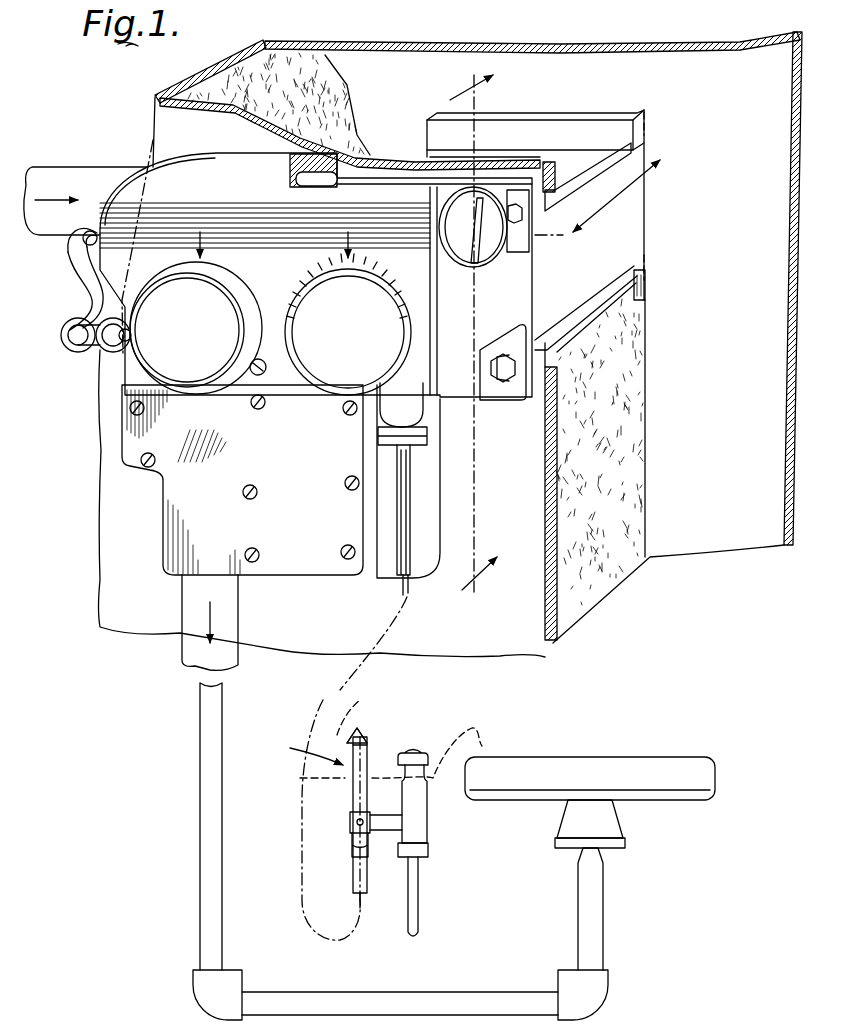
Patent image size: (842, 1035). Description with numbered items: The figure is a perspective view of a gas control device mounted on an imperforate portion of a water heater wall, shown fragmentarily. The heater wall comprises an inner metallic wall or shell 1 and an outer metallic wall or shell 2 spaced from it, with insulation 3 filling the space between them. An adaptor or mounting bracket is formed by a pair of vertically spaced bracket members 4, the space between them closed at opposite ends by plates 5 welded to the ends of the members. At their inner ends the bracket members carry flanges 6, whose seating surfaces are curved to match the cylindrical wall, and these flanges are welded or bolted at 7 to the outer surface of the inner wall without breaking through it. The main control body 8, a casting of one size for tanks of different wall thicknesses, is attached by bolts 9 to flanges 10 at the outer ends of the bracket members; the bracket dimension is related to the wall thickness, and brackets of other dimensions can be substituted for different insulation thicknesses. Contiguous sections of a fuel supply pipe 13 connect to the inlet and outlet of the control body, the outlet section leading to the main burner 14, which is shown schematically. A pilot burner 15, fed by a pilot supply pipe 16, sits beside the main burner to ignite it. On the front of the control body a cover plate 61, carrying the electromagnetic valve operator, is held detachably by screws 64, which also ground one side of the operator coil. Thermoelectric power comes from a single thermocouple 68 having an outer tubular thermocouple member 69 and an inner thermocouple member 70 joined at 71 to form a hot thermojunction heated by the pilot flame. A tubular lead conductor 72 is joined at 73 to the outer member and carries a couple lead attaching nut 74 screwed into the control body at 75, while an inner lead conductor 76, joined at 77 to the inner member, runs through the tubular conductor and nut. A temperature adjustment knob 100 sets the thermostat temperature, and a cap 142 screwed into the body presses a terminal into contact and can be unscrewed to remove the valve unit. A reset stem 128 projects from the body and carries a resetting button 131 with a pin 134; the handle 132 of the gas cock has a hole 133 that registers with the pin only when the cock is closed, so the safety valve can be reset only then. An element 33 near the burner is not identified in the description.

The inner metallic wall or shell 1 is at (565, 42).
The outer metallic wall or shell 2 is at (165, 127).
The insulation 3 is at (205, 84).
The bracket members 4 is at (612, 160).
The plates 5 is at (648, 226).
The flanges 6 is at (520, 128).
The attachment location 7 is at (648, 125).
The main control body 8 is at (279, 273).
The bolts 9 is at (500, 375).
The flanges 10 is at (553, 198).
The fuel supply pipe 13 is at (48, 177).
The main burner 14 is at (628, 762).
The pilot burner 15 is at (420, 812).
The pilot supply pipe 16 is at (422, 913).
The cone coupling 33 is at (612, 823).
The cover plate 61 is at (260, 460).
The screws 64 is at (143, 455).
The thermocouple 68 is at (303, 749).
The outer tubular thermocouple member 69 is at (362, 750).
The inner thermocouple member 70 is at (373, 745).
The hot thermojunction 71 is at (365, 735).
The tubular lead conductor 72 is at (405, 535).
The joint 73 is at (345, 835).
The couple lead attaching nut 74 is at (420, 440).
The threaded connection in control body 75 is at (430, 428).
The inner lead conductor 76 is at (403, 590).
The joint 77 is at (350, 820).
The temperature selecting or adjustment knob 100 is at (370, 297).
The reset stem 128 is at (85, 242).
The cocking or resetting button 131 is at (88, 266).
The handle 132 is at (162, 296).
The hole 133 is at (133, 345).
The pin 134 is at (66, 325).
The cap 142 is at (488, 250).